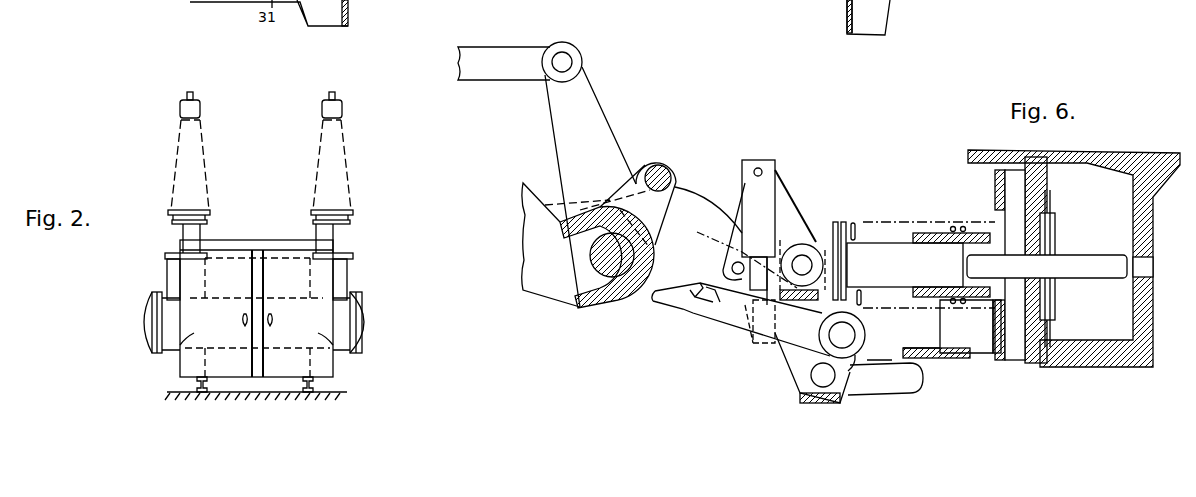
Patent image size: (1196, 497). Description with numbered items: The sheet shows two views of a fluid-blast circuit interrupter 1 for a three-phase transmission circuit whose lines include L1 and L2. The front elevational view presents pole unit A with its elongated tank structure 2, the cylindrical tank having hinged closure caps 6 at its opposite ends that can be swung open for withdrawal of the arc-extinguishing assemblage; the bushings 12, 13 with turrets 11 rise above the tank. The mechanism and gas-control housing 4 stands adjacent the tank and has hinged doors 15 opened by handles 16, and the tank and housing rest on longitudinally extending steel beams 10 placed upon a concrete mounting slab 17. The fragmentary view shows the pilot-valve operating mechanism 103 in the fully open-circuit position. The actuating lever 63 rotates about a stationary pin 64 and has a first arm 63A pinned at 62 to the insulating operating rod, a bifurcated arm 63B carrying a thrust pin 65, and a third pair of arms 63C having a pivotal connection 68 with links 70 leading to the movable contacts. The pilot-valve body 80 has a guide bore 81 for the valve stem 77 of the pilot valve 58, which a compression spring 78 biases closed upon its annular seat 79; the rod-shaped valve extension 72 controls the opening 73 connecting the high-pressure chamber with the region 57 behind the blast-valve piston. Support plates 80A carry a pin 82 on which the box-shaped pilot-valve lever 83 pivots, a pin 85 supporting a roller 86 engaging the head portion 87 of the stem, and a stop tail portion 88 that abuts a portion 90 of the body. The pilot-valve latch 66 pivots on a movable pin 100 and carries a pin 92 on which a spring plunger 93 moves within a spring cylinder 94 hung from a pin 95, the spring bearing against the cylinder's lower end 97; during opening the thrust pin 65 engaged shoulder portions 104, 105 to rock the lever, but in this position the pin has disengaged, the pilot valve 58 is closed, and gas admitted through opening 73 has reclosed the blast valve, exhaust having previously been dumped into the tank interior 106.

In FIG. 2, the circuit interrupter 1 is at (262, 150).
In FIG. 2, the pole unit A is at (262, 215).
In FIG. 2, the tank structure 2 is at (400, 341).
In FIG. 2, the first bushing 12 is at (155, 178).
In FIG. 2, the second bushing 13 is at (379, 178).
In FIG. 2, the line L1 is at (187, 96).
In FIG. 2, the line L2 is at (336, 97).
In FIG. 2, the bushing turret 11 is at (183, 233).
In FIG. 2, the hinged closure caps 6 is at (140, 310).
In FIG. 2, the handles 16 is at (243, 323).
In FIG. 2, the hinged doors 15 is at (194, 338).
In FIG. 2, the steel beams 10 is at (197, 385).
In FIG. 2, the mechanism and gas-control housing 4 is at (289, 368).
In FIG. 2, the concrete mounting slab 17 is at (190, 393).
In FIG. 6, the links 70 is at (505, 47).
In FIG. 6, the pivotal connection 68 is at (578, 53).
In FIG. 6, the third pair of arms 63C is at (602, 104).
In FIG. 6, the thrust pin 65 is at (657, 165).
In FIG. 6, the bifurcated arm 63B is at (673, 173).
In FIG. 6, the actuating lever 63 is at (642, 292).
In FIG. 6, the stationary pin 64 is at (600, 258).
In FIG. 6, the first integral arm 63A is at (712, 197).
In FIG. 6, the pin 95 is at (757, 167).
In FIG. 6, the lower end 97 is at (737, 261).
In FIG. 6, the spring plunger 93 is at (750, 275).
In FIG. 6, the shoulder portion 104 is at (706, 284).
In FIG. 6, the spring cylinder 94 is at (766, 192).
In FIG. 6, the support plates 80A is at (786, 203).
In FIG. 6, the pin 85 is at (812, 250).
In FIG. 6, the roller 86 is at (800, 255).
In FIG. 6, the head portion 87 is at (847, 265).
In FIG. 6, the compression spring 78 is at (856, 232).
In FIG. 6, the valve stem 77 is at (901, 280).
In FIG. 6, the guide bore 81 is at (929, 233).
In FIG. 6, the portion of pilot-valve body 90 is at (938, 348).
In FIG. 6, the pilot-valve body 80 is at (968, 362).
In FIG. 6, the pilot-valve latch 66 is at (695, 316).
In FIG. 6, the pilot-valve operating mechanism 103 is at (702, 359).
In FIG. 6, the pin 92 is at (748, 324).
In FIG. 6, the pin connection 62 is at (779, 345).
In FIG. 6, the movable pin 100 is at (866, 332).
In FIG. 6, the pin 82 is at (800, 387).
In FIG. 6, the stop tail portion 88 is at (924, 380).
In FIG. 6, the pilot-valve lever 83 is at (898, 392).
In FIG. 6, the interior of tank structure 106 is at (985, 409).
In FIG. 6, the region in back of blast-valve actuating piston 57 is at (1120, 175).
In FIG. 6, the opening 73 is at (1148, 266).
In FIG. 6, the shoulder portion 105 is at (1002, 184).
In FIG. 6, the pilot valve 58 is at (1052, 240).
In FIG. 6, the annular seat 79 is at (1050, 205).
In FIG. 6, the rod-shaped valve extension 72 is at (1101, 265).